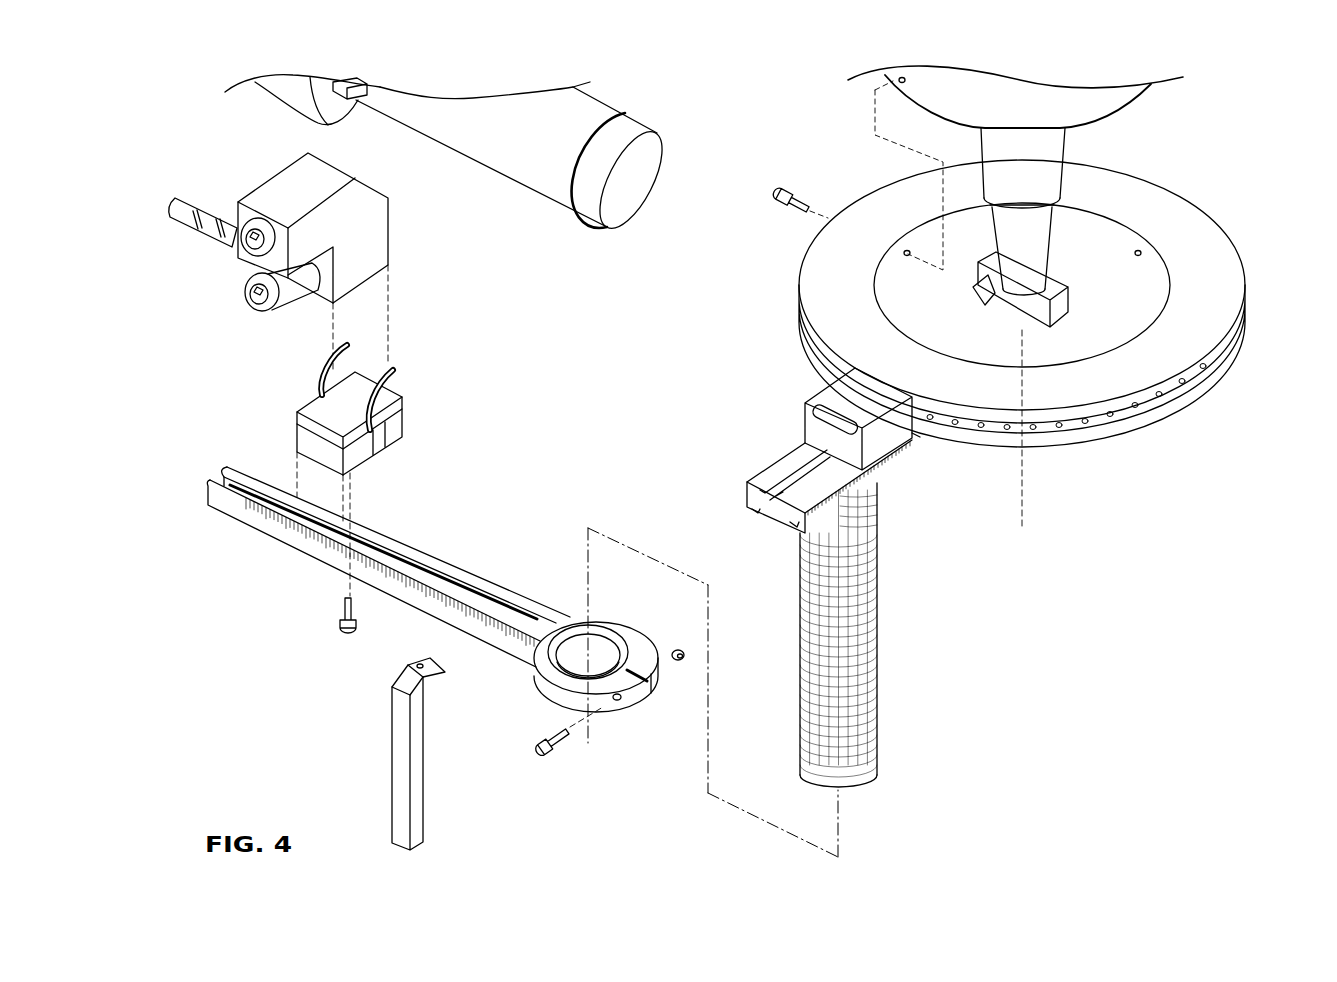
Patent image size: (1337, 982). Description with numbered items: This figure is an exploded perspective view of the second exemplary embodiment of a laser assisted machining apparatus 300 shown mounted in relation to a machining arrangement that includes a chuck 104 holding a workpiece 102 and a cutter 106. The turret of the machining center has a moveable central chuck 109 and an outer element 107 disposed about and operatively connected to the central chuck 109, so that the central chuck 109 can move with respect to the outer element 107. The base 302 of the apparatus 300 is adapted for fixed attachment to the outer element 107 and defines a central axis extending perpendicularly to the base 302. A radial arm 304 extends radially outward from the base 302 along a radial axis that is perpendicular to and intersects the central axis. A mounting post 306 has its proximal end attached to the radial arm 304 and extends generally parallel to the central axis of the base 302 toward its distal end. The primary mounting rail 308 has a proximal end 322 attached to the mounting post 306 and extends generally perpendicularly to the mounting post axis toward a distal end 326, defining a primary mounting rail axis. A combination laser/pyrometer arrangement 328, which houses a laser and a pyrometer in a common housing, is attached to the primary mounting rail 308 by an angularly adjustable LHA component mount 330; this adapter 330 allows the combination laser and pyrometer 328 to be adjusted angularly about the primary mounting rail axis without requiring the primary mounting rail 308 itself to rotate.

The workpiece 102 is at (489, 153).
The chuck 104 is at (294, 96).
The cutter 106 is at (406, 664).
The outer element 107 is at (1097, 103).
The central chuck 109 is at (1049, 178).
The laser assisted machining apparatus 300 is at (1009, 690).
The base 302 is at (1218, 283).
The radial arm 304 is at (827, 397).
The mounting post 306 is at (865, 596).
The primary mounting rail 308 is at (507, 598).
The proximal end of the primary mounting rail 322 is at (553, 686).
The distal end of the primary mounting rail 326 is at (215, 504).
The combination laser/pyrometer arrangement 328 is at (378, 248).
The angularly adjustable LHA component mount 330 is at (398, 423).